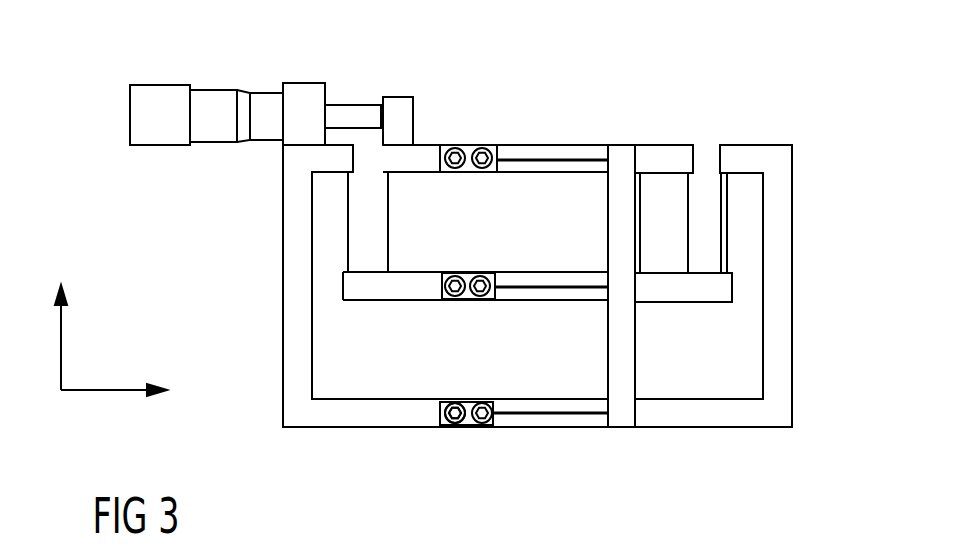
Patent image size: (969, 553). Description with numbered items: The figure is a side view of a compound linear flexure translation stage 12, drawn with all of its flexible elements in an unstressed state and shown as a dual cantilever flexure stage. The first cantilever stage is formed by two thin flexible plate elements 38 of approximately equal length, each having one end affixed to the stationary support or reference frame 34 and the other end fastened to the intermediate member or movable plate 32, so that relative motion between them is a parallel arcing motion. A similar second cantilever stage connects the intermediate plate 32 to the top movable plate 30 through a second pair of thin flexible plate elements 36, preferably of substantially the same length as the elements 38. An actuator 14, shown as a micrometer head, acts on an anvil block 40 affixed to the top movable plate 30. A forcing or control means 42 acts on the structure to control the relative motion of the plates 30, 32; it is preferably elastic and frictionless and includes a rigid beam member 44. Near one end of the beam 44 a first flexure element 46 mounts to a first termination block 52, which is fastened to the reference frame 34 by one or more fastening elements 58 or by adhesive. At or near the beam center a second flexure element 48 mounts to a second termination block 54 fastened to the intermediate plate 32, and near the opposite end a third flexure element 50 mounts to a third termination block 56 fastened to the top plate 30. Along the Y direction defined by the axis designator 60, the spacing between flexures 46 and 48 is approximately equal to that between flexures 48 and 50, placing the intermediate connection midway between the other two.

The linear translation stage 12 is at (730, 53).
The actuator 14 is at (148, 118).
The top movable plate 30 is at (683, 148).
The intermediate member or movable plate 32 is at (722, 288).
The stationary support or reference frame 34 is at (778, 378).
The thin flexible plate elements (second pair) 36 is at (388, 245).
The thin flexible plate elements (first pair) 38 is at (348, 247).
The anvil block 40 is at (402, 110).
The forcing or control means 42 is at (658, 348).
The rigid beam member 44 is at (625, 148).
The first flexure element 46 is at (552, 413).
The second flexure element 48 is at (547, 287).
The third flexure element 50 is at (553, 158).
The first termination block 52 is at (468, 402).
The second termination block 54 is at (470, 273).
The third termination block 56 is at (470, 145).
The fastening elements 58 is at (448, 418).
The axis designator 60 is at (95, 348).